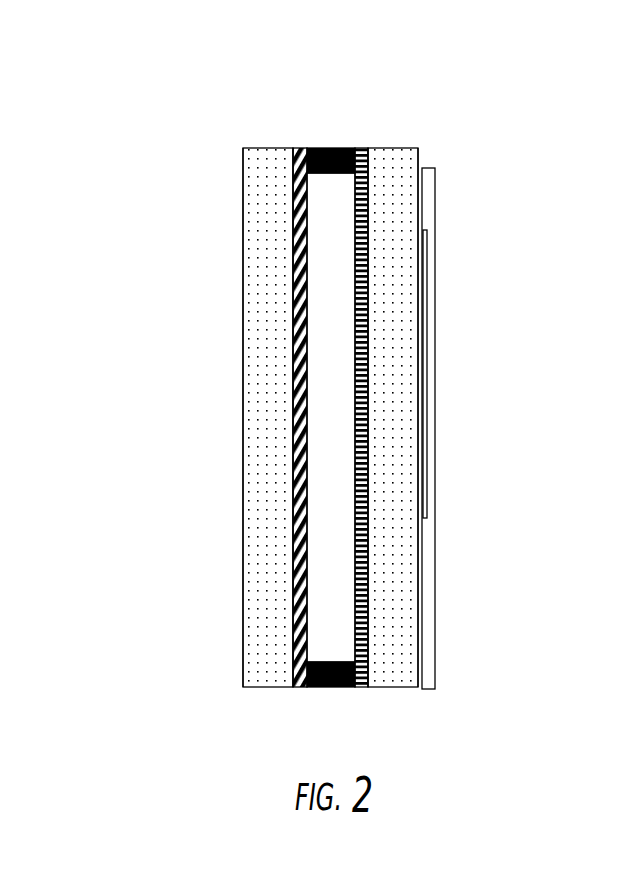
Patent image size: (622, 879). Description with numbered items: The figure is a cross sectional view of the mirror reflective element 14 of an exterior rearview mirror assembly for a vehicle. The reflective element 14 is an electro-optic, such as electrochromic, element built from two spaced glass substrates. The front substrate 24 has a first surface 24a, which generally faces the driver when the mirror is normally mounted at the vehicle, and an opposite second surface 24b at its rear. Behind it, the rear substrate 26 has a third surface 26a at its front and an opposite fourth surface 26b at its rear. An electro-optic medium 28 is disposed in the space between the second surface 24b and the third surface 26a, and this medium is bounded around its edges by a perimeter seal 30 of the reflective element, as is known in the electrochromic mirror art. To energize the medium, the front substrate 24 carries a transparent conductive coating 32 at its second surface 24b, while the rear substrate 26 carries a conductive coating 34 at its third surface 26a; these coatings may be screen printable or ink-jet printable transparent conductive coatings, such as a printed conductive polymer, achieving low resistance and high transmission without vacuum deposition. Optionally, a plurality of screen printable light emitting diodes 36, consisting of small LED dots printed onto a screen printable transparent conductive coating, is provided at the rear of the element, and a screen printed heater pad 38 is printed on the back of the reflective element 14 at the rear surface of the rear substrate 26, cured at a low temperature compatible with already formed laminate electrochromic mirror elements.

The mirror reflective element 14 is at (133, 83).
The front substrate 24 is at (267, 447).
The first surface 24a is at (243, 325).
The second surface 24b is at (300, 571).
The rear substrate 26 is at (405, 387).
The third surface 26a is at (368, 315).
The fourth surface 26b is at (418, 218).
The electro-optic medium 28 is at (330, 276).
The perimeter seal 30 is at (332, 148).
The transparent conductive coating 32 is at (300, 490).
The conductive coating 34 is at (362, 455).
The screen printable light emitting diodes 36 is at (425, 413).
The screen printed heater pad 38 is at (427, 184).